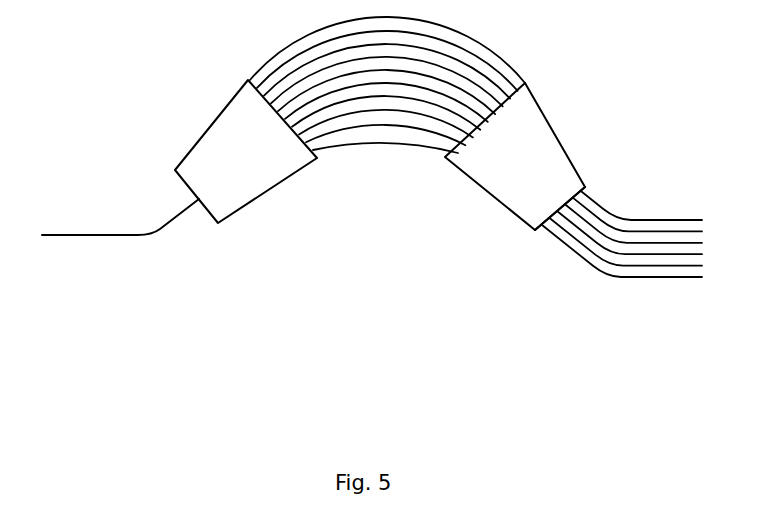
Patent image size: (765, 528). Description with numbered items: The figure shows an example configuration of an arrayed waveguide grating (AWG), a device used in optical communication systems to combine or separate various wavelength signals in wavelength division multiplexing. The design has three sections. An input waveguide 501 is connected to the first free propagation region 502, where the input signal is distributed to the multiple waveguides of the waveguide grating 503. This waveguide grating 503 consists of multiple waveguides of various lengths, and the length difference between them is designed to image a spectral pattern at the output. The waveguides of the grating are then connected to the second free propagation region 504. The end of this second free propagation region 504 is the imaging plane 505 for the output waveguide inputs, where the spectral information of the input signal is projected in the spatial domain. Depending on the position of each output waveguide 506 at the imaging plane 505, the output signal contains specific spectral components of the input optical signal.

The input waveguide 501 is at (88, 237).
The first free propagation region 502 is at (193, 143).
The waveguide grating 503 is at (372, 147).
The second free propagation region 504 is at (543, 103).
The imaging plane 505 is at (530, 228).
The output waveguide 506 is at (590, 263).